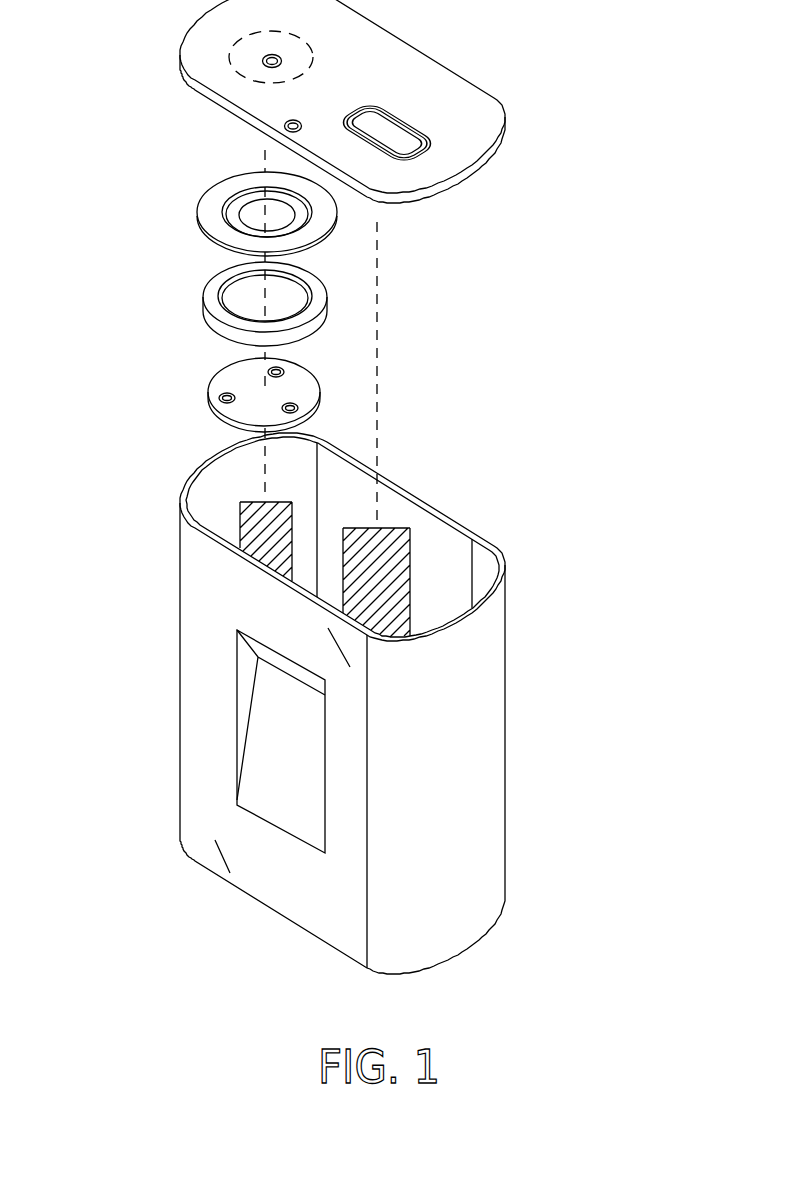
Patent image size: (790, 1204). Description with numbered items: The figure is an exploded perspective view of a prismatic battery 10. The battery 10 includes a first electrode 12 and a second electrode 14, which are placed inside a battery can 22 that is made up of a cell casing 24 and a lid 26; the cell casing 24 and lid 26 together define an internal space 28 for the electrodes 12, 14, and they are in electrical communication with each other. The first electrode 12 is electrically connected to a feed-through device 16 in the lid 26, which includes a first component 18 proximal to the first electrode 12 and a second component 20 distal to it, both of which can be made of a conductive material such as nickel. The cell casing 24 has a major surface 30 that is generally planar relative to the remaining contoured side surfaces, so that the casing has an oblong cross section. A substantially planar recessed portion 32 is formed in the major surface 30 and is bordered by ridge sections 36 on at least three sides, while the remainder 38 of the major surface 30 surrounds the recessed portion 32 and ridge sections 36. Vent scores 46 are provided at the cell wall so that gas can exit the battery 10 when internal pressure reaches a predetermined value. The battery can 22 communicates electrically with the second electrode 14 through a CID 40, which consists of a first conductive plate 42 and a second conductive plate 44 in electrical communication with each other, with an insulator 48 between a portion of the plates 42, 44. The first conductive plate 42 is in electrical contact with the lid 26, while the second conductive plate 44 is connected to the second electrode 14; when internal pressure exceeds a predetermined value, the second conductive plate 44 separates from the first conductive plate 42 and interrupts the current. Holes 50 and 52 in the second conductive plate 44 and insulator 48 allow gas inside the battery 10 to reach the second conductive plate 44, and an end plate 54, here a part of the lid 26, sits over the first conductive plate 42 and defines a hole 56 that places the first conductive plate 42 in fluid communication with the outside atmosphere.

The battery 10 is at (662, 160).
The first electrode 12 is at (403, 569).
The second electrode 14 is at (265, 512).
The feed-through device 16 is at (396, 108).
The first component 18 is at (386, 160).
The second component 20 is at (436, 147).
The battery can 22 is at (413, 623).
The cell casing 24 is at (507, 800).
The lid 26 is at (478, 195).
The internal space 28 is at (404, 508).
The major surface 30 is at (325, 921).
The recessed portion 32 is at (298, 761).
The ridge sections 36 is at (231, 741).
The remainder of major surface 38 is at (255, 612).
The CID 40 is at (212, 283).
The first conductive plate 42 is at (205, 188).
The second conductive plate 44 is at (256, 395).
The vent scores 46 is at (336, 645).
The insulator 48 is at (272, 295).
The hole 50 is at (298, 410).
The hole 52 is at (298, 301).
The end plate 54 is at (318, 57).
The hole 56 is at (272, 68).